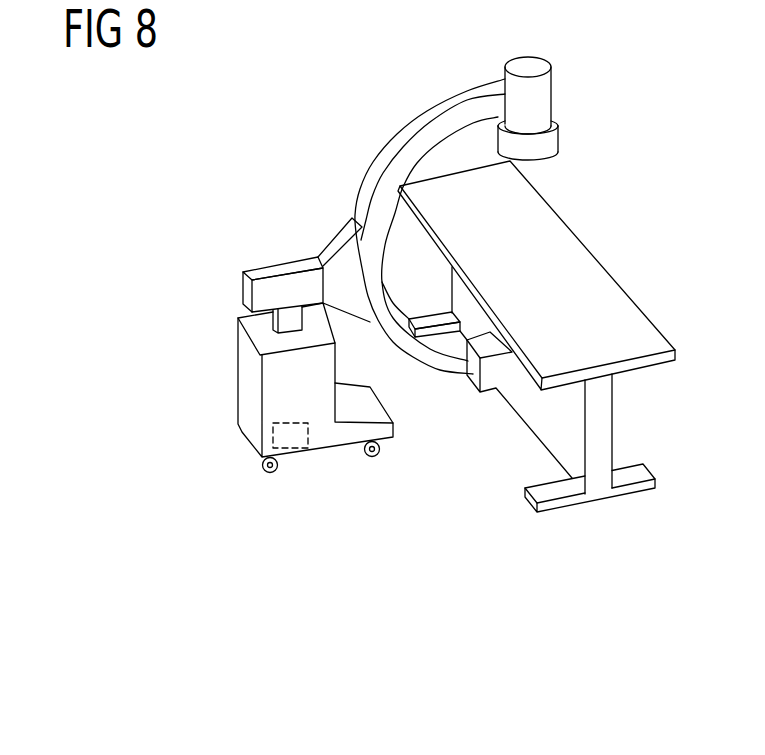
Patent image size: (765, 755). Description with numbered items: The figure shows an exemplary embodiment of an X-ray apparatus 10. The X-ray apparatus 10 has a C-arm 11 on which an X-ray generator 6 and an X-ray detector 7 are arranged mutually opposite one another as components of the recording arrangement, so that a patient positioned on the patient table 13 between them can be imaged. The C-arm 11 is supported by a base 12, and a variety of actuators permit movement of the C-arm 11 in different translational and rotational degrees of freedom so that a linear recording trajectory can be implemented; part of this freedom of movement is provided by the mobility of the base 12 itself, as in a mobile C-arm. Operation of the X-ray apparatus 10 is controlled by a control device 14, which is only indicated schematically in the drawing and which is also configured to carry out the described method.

The X-ray apparatus 10 is at (309, 108).
The C-arm 11 is at (413, 123).
The X-ray generator 6 is at (550, 147).
The patient table 13 is at (627, 322).
The X-ray detector 7 is at (492, 378).
The base 12 is at (247, 385).
The control device 14 is at (297, 437).